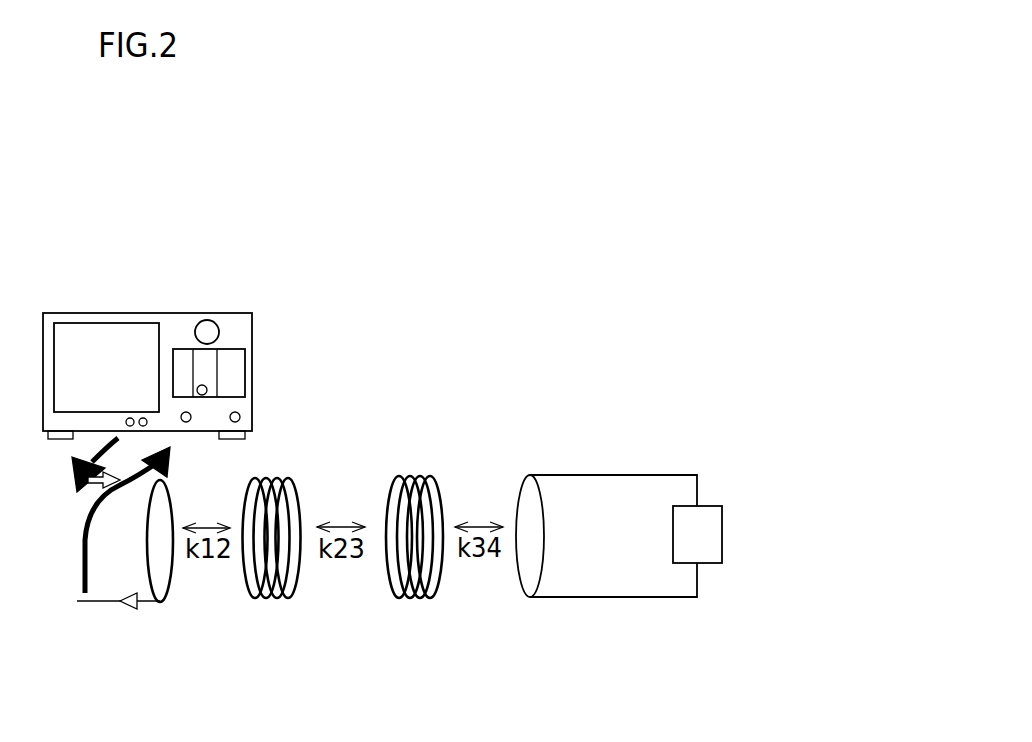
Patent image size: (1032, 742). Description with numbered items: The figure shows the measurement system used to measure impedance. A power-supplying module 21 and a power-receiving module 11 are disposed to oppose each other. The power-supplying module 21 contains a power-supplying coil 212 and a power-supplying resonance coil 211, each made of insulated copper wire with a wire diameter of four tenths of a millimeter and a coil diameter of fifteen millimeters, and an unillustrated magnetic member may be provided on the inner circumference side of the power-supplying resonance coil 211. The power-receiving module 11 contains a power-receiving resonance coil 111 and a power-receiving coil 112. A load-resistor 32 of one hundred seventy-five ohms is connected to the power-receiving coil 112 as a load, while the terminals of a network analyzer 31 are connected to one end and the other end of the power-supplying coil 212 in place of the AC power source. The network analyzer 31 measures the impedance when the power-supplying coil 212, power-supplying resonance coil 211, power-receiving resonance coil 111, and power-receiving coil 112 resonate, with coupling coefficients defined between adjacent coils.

The network analyzer 31 is at (187, 312).
The power-supplying module 21 is at (273, 655).
The power-supplying coil 212 is at (162, 603).
The power-supplying resonance coil 211 is at (280, 598).
The power-receiving module 11 is at (540, 652).
The power-receiving resonance coil 111 is at (415, 598).
The power-receiving coil 112 is at (530, 597).
The load-resistor 32 is at (710, 506).